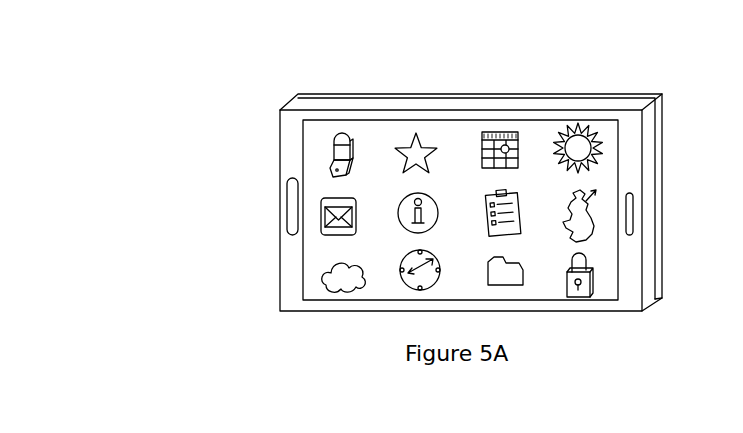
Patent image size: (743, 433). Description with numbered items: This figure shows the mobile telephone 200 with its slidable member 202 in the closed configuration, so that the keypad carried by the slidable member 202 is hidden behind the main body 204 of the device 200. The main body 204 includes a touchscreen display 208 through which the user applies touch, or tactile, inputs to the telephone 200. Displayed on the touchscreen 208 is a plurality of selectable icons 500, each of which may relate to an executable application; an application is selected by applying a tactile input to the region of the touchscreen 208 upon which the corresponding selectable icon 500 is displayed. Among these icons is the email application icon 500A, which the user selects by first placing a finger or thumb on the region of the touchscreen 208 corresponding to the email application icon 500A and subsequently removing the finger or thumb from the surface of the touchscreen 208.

The mobile telephone 200 is at (230, 161).
The slidable member 202 is at (662, 260).
The main body 204 is at (278, 124).
The touchscreen display 208 is at (335, 300).
The selectable icons 500 is at (515, 283).
The email application icon 500A is at (311, 223).